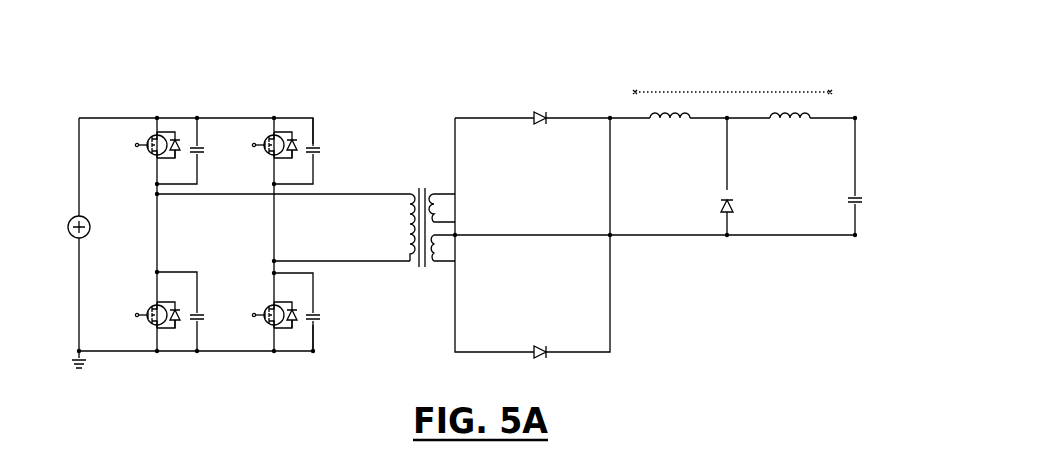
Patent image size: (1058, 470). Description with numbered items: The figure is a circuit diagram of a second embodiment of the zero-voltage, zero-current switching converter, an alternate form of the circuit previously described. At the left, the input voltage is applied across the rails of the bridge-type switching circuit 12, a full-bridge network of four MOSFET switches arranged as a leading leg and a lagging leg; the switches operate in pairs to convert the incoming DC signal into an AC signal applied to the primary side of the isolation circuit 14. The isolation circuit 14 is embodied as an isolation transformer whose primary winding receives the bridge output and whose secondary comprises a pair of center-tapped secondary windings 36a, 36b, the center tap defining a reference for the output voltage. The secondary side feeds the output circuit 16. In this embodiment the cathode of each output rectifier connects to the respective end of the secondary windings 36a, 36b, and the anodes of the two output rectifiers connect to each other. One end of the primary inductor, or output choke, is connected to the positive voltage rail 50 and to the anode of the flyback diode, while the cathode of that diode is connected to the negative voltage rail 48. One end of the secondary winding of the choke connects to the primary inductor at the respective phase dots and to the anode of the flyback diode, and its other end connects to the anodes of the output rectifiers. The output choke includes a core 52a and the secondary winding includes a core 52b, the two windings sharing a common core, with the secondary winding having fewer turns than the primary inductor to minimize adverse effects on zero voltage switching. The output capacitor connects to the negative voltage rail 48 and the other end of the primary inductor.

The bridge-type switching circuit 12 is at (204, 85).
The isolation circuit 14 is at (410, 137).
The output circuit 16 is at (642, 50).
The secondary winding 36a is at (437, 211).
The secondary winding 36b is at (437, 250).
The negative voltage rail 48 is at (855, 235).
The positive voltage rail 50 is at (856, 118).
The core 52a is at (793, 92).
The core 52b is at (672, 92).